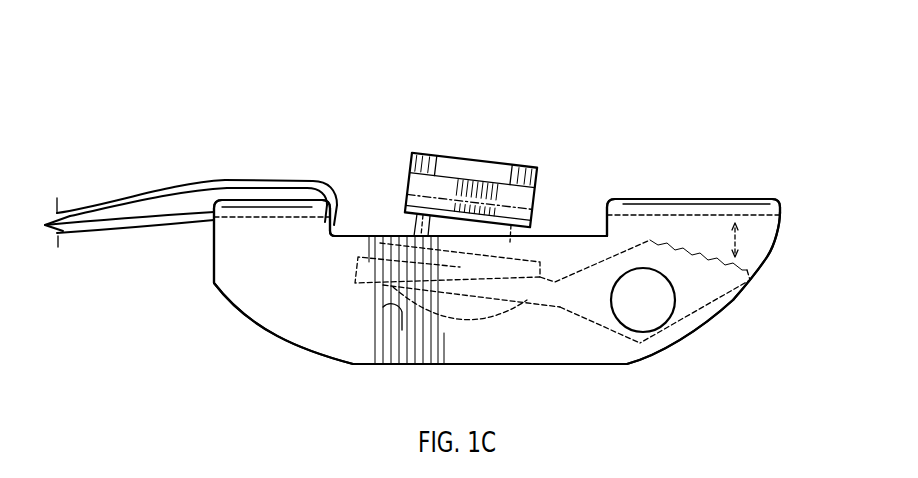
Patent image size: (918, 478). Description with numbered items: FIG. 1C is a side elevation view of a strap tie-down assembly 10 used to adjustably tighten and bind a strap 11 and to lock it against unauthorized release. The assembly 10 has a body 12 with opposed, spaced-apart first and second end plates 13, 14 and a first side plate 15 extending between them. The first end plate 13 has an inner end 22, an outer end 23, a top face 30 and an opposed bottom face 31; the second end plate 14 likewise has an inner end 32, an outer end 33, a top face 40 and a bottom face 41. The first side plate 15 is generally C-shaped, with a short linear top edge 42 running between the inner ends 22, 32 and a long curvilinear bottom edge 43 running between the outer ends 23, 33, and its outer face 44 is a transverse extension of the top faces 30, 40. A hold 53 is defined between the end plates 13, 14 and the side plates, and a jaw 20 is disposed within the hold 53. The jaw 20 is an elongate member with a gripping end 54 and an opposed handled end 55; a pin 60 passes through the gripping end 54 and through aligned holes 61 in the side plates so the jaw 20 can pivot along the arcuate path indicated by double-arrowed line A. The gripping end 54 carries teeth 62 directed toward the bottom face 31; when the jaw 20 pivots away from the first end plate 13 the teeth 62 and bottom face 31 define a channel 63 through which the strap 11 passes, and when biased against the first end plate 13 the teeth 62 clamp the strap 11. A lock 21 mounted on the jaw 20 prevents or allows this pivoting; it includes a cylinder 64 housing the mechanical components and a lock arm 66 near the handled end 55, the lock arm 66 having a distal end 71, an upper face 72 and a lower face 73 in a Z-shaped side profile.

The strap tie-down assembly 10 is at (722, 87).
The strap 11 is at (152, 192).
The body 12 is at (634, 366).
The first end plate 13 is at (742, 198).
The second end plate 14 is at (298, 181).
The first side plate 15 is at (598, 366).
The jaw 20 is at (355, 260).
The lock 21 is at (554, 192).
The inner end 22 is at (605, 208).
The outer end 23 is at (782, 208).
The top face 30 is at (684, 197).
The bottom face 31 is at (774, 216).
The inner end 32 is at (334, 209).
The outer end 33 is at (200, 209).
The top face 40 is at (238, 199).
The bottom face 41 is at (233, 219).
The top edge 42 is at (362, 235).
The bottom edge 43 is at (410, 366).
The outer face 44 is at (547, 355).
The hold 53 is at (383, 307).
The gripping end 54 is at (738, 292).
The handled end 55 is at (357, 284).
The pin 60 is at (668, 327).
The holes 61 is at (668, 307).
The teeth 62 is at (658, 243).
The channel 63 is at (700, 225).
The cylinder 64 is at (457, 156).
The lock arm 66 is at (437, 154).
The distal end 71 is at (409, 183).
The upper face 72 is at (518, 168).
The lower face 73 is at (516, 208).
The arcuate path of motion A is at (765, 258).